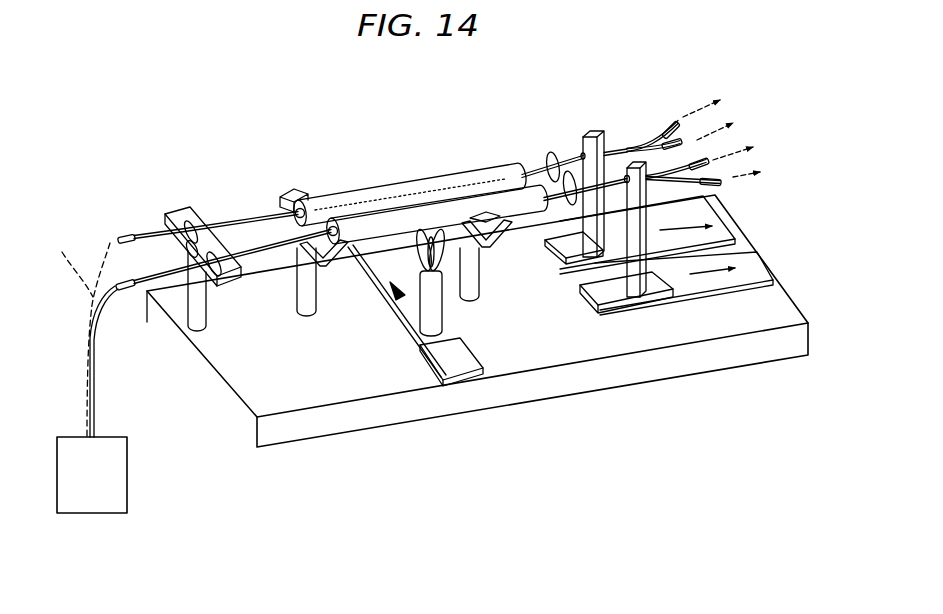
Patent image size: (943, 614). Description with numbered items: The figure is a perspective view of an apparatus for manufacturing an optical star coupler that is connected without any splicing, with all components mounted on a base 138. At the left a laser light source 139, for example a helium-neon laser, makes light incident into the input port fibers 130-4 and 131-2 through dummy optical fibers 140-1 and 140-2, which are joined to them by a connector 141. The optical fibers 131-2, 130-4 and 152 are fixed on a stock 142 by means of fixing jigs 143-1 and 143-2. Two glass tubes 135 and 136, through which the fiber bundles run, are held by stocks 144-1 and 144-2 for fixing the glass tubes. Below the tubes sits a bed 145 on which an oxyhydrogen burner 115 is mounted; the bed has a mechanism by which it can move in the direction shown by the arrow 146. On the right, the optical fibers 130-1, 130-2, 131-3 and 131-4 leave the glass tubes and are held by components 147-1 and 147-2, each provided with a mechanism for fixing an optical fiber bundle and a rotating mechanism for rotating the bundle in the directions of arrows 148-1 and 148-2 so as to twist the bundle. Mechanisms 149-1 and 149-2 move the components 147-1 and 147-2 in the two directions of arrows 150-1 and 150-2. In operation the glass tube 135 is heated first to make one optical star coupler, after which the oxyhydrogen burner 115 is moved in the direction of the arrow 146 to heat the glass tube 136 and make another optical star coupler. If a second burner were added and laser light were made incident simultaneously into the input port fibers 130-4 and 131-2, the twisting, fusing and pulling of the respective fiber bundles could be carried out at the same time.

The oxyhydrogen burner 115 is at (437, 300).
The optical fiber 130-1 is at (720, 180).
The optical fiber 130-2 is at (706, 167).
The input port fiber 130-4 is at (188, 268).
The input port fiber 131-2 is at (150, 238).
The optical fiber 131-3 is at (663, 131).
The optical fiber 131-4 is at (637, 140).
The glass tube 135 is at (415, 210).
The glass tube 136 is at (365, 190).
The base 138 is at (353, 423).
The laser light source 139 is at (107, 509).
The dummy optical fiber 140-1 is at (97, 390).
The dummy optical fiber 140-2 is at (117, 243).
The connector 141 is at (142, 355).
The stock 142 is at (218, 317).
The fixing jig 143-1 is at (317, 310).
The fixing jig 143-2 is at (193, 220).
The stock for fixing the glass tube 144-1 is at (309, 313).
The stock for fixing the glass tube 144-2 is at (473, 267).
The bed 145 is at (413, 328).
The arrow 146 is at (400, 298).
The fiber bundle fixing and rotating component 147-1 is at (707, 168).
The fiber bundle fixing and rotating component 147-2 is at (596, 130).
The arrow 148-1 is at (565, 155).
The arrow 148-2 is at (537, 157).
The moving mechanism 149-1 is at (635, 312).
The moving mechanism 149-2 is at (587, 268).
The arrow 150-1 is at (760, 280).
The arrow 150-2 is at (717, 233).
The optical fiber 152 is at (180, 268).